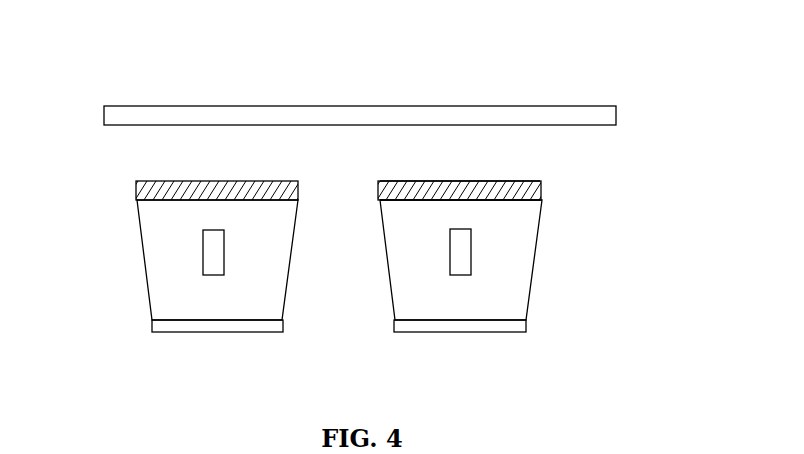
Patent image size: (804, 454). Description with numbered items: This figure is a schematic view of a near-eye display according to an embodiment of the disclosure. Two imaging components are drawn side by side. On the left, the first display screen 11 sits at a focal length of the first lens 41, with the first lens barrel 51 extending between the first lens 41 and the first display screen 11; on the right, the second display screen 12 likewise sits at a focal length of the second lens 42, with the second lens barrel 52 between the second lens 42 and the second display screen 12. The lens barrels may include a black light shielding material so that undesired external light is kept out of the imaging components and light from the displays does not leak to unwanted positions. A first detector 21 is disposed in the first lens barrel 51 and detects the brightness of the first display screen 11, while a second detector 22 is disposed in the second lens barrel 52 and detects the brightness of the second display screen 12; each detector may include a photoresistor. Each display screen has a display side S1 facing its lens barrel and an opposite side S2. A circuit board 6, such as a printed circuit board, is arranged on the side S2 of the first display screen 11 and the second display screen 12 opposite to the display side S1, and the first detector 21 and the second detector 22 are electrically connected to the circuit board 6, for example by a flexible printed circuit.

The circuit board 6 is at (605, 115).
The first display screen 11 is at (136, 183).
The second display screen 12 is at (541, 182).
The display side S1 is at (395, 206).
The side opposite the display side S2 is at (395, 178).
The first detector 21 is at (217, 258).
The second detector 22 is at (460, 252).
The first lens 41 is at (155, 327).
The second lens 42 is at (520, 328).
The first lens barrel 51 is at (150, 258).
The second lens barrel 52 is at (530, 258).